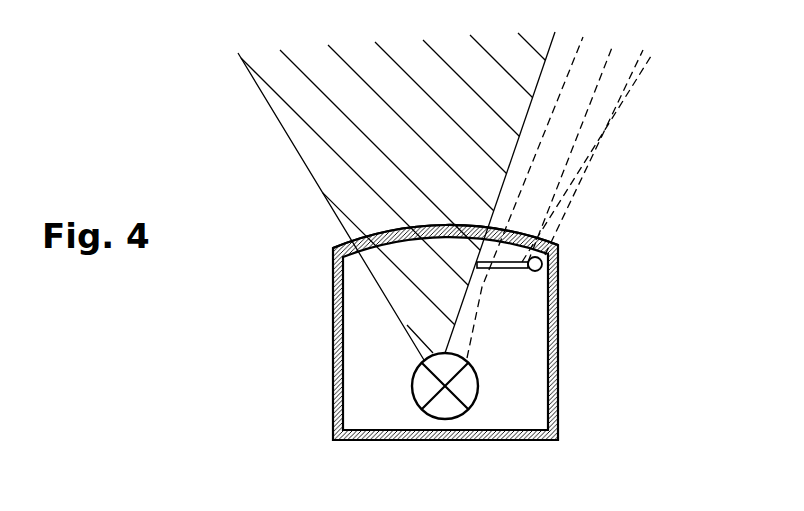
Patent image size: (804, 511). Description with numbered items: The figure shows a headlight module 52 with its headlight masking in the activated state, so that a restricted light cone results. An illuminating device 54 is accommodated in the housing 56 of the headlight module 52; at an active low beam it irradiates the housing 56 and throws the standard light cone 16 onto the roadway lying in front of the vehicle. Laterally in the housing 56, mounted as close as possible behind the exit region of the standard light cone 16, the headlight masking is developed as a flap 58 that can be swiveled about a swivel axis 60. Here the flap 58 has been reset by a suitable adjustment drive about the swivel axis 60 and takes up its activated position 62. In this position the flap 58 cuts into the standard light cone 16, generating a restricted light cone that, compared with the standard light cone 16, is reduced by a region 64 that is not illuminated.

The standard light cone 16 is at (306, 96).
The headlight module 52 is at (290, 331).
The illuminating device 54 is at (444, 410).
The housing 56 is at (333, 393).
The flap 58 is at (513, 235).
The swivel axis 60 is at (543, 264).
The position 62 is at (502, 295).
The region 64 is at (590, 118).